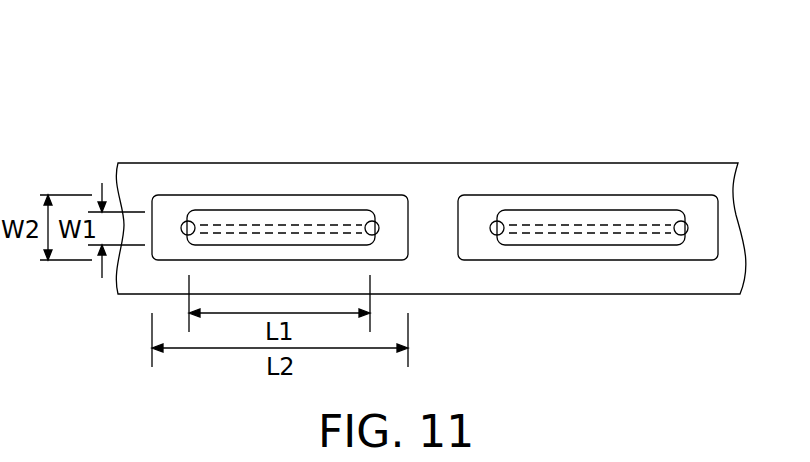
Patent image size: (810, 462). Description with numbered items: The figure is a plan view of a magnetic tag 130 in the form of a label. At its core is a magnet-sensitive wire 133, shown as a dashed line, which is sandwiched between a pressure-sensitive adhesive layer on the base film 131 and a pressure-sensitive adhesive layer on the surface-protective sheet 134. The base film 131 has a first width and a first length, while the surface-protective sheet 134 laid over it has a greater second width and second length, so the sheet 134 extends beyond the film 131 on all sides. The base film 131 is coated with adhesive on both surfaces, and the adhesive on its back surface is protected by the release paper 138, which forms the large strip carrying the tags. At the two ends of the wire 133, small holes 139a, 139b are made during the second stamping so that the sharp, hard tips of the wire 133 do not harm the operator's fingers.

The tag assembly 130 is at (431, 194).
The release paper 138 is at (605, 163).
The surface-protective sheet 134 is at (587, 261).
The base film 131 is at (652, 246).
The magnet-sensitive wire 133 is at (518, 233).
The small hole 139a is at (183, 222).
The small hole 139b is at (378, 222).